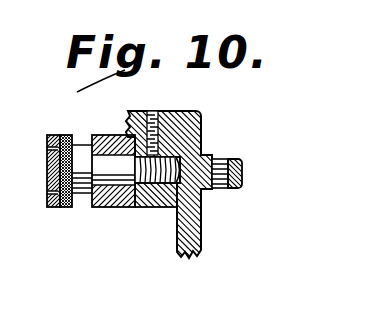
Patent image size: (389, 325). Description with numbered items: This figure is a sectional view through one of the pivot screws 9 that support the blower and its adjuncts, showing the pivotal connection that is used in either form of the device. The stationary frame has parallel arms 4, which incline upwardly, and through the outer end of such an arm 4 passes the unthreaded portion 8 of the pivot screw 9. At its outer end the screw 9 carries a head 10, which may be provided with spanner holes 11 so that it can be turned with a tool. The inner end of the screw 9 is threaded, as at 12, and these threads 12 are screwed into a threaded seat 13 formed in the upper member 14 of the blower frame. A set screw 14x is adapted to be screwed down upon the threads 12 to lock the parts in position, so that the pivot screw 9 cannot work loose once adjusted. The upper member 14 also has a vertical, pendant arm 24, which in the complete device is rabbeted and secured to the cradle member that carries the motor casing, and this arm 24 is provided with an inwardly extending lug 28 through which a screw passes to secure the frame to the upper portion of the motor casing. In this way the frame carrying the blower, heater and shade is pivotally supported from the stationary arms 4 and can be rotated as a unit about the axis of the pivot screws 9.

The parallel arms 4 is at (111, 196).
The unthreaded portion 8 is at (110, 157).
The pivot screw 9 is at (65, 150).
The head 10 is at (60, 207).
The spanner holes 11 is at (50, 192).
The threads 12 is at (165, 187).
The threaded seat 13 is at (146, 190).
The upper member 14 is at (170, 122).
The set screw 14x is at (156, 112).
The vertical arms 24 is at (187, 223).
The inwardly extending lugs 28 is at (243, 172).